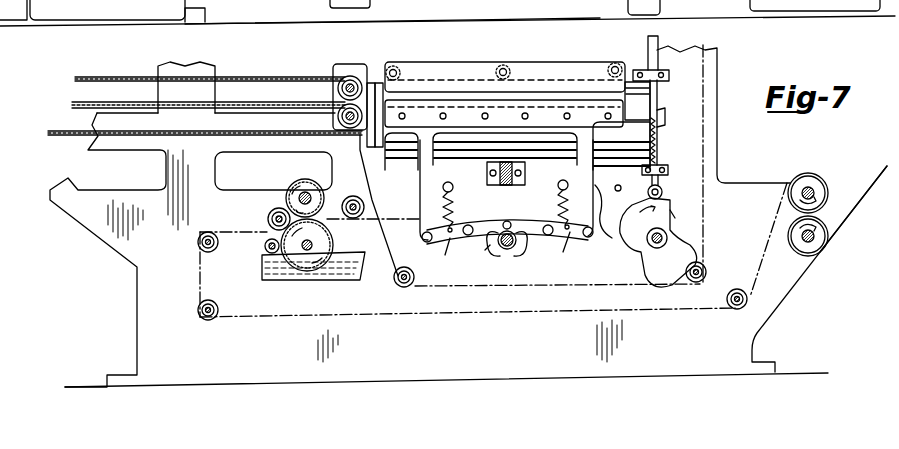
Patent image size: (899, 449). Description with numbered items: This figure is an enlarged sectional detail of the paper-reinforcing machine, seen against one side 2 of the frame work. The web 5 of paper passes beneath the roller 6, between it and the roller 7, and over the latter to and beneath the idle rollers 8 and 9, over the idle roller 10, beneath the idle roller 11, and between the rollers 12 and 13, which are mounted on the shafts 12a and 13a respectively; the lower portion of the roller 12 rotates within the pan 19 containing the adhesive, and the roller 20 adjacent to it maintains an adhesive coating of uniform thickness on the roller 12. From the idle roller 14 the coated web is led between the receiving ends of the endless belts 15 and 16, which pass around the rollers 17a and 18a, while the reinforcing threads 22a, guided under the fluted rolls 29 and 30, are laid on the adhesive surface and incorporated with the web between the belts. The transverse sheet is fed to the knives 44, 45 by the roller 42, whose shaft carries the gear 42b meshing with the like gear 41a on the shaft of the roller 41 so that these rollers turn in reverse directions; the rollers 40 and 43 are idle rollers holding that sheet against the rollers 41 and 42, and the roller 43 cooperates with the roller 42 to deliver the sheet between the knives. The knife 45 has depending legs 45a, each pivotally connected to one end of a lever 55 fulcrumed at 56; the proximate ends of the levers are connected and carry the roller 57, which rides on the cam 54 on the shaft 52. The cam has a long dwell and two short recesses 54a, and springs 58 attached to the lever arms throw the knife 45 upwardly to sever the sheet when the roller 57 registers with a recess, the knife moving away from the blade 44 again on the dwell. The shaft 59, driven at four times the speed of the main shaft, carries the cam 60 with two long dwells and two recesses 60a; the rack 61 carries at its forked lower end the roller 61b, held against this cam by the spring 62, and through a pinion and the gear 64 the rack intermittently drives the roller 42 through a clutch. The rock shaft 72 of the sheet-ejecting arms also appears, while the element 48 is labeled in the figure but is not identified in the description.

The frame work side 2 is at (746, 211).
The web 5 is at (872, 190).
The roller 6 is at (815, 254).
The roller 7 is at (810, 174).
The idle roller 8 is at (737, 291).
The idle roller 9 is at (213, 306).
The idle roller 10 is at (210, 253).
The idle roller 11 is at (268, 218).
The roller 12 is at (307, 245).
The shaft 12a is at (313, 245).
The roller 13 is at (304, 186).
The shaft 13a is at (300, 195).
The idle roller 14 is at (352, 197).
The endless belt 15 is at (88, 80).
The endless belt 16 is at (84, 109).
The roller 17a is at (337, 90).
The roller 18a is at (337, 119).
The pan 19 is at (290, 282).
The roller 20 is at (265, 247).
The threads 22a is at (706, 240).
The fluted roll 29 is at (705, 272).
The fluted roll 30 is at (396, 285).
The idle roller 40 is at (405, 168).
The roller 41 is at (621, 146).
The gear 41a is at (362, 143).
The roller 42 is at (637, 101).
The gear 42b is at (371, 82).
The idle roller 43 is at (380, 82).
The knife blade 44 is at (505, 77).
The knife 45 is at (504, 113).
The depending legs 45a is at (420, 206).
The pivot 48 is at (499, 216).
The shaft 52 is at (505, 250).
The cam 54 is at (515, 256).
The recesses 54a is at (492, 250).
The lever 55 is at (503, 249).
The fulcrum 56 is at (470, 224).
The roller 57 is at (506, 186).
The springs 58 is at (455, 203).
The shaft 59 is at (647, 242).
The cam 60 is at (655, 282).
The recesses 60a is at (673, 235).
The rack 61 is at (658, 46).
The roller 61b is at (663, 189).
The spring 62 is at (658, 141).
The gear 64 is at (664, 118).
The rock shaft 72 is at (616, 186).